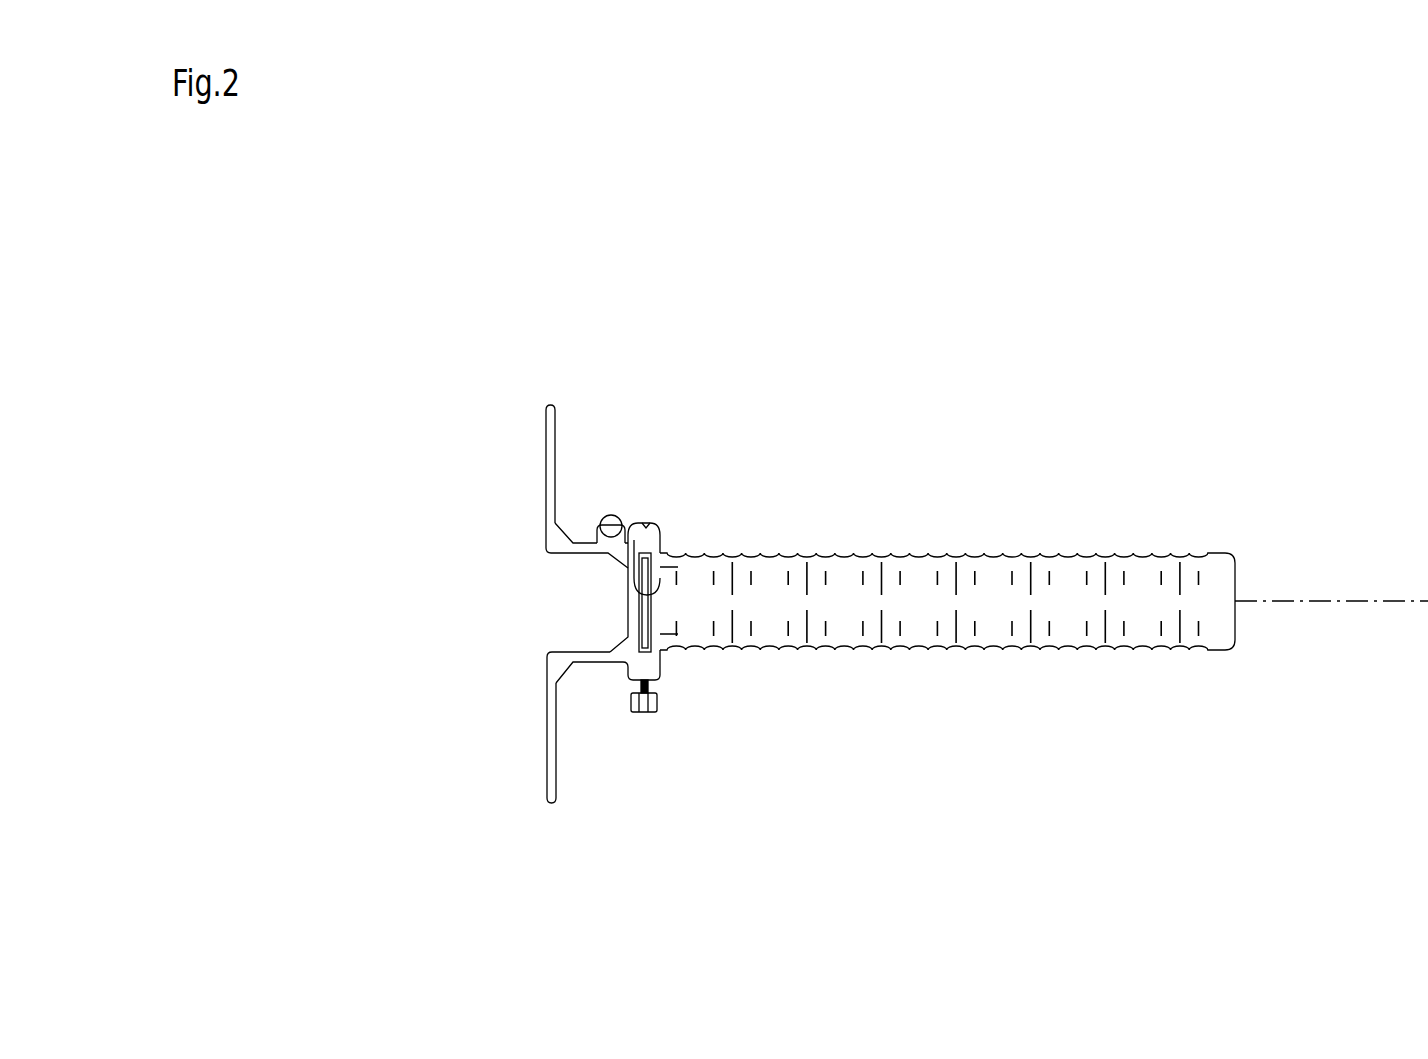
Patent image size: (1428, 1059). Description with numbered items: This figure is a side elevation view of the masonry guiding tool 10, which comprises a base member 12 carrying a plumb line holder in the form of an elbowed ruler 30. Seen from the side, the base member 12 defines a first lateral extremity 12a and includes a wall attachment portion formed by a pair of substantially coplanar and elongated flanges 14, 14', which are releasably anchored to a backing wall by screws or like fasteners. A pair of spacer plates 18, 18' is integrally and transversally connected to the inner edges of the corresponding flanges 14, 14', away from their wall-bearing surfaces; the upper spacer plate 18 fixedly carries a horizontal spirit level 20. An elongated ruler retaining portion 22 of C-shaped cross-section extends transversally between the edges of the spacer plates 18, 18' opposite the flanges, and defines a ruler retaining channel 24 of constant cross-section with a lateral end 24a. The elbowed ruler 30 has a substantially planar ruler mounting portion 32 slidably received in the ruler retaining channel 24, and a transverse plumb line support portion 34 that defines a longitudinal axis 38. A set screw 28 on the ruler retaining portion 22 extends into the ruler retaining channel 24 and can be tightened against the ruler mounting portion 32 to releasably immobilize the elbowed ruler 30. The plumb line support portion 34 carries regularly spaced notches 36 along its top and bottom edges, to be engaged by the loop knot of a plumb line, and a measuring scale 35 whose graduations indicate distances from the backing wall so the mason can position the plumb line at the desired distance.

The masonry guiding tool 10 is at (1002, 310).
The base member 12 is at (552, 400).
The first lateral extremity 12a is at (546, 427).
The elongated flange 14 is at (538, 486).
The elongated flange 14' is at (499, 760).
The spacer plate 18 is at (568, 559).
The spacer plate 18' is at (618, 730).
The horizontal spirit level 20 is at (608, 515).
The ruler retaining portion 22 is at (656, 526).
The ruler retaining channel 24 is at (658, 597).
The lateral end of ruler retaining channel 24a is at (634, 530).
The set screw 28 is at (648, 713).
The elbowed ruler 30 is at (1222, 600).
The ruler mounting portion 32 is at (642, 613).
The plumb line support portion 34 is at (1035, 572).
The measuring scale 35 is at (988, 630).
The notches 36 is at (955, 555).
The longitudinal axis 38 is at (1313, 603).